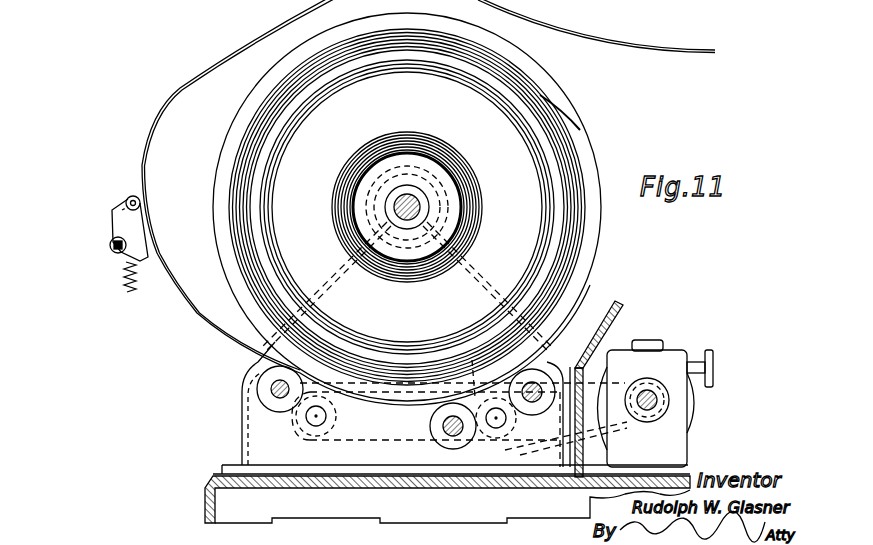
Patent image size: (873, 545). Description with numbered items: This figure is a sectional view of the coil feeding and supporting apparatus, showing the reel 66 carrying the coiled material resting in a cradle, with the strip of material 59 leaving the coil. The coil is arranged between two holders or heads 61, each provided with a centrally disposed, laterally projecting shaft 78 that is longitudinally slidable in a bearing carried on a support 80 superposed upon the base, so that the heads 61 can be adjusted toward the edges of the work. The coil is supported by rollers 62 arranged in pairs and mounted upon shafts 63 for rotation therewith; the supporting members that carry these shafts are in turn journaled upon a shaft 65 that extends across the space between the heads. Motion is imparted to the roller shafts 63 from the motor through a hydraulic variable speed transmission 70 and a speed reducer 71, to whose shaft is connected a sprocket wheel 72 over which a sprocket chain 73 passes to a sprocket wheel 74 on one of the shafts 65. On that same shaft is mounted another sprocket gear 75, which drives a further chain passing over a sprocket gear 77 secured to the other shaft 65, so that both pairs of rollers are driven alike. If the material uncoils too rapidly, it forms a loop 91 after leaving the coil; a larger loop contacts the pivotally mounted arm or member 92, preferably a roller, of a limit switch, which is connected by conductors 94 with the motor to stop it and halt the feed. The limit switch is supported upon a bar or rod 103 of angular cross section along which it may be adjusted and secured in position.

The strip 59 is at (673, 48).
The holder or head 61 is at (530, 89).
The reel 66 is at (557, 107).
The shaft 78 is at (420, 205).
The support 80 is at (477, 258).
The loop 91 is at (162, 104).
The arm or member 92 is at (133, 197).
The bar or rod 103 is at (111, 247).
The conductors 94 is at (124, 289).
The roller 62 is at (288, 368).
The shaft 63 is at (271, 389).
The shaft 65 is at (316, 418).
The sprocket gear 77 is at (308, 431).
The sprocket wheel 74 is at (527, 432).
The sprocket gear 75 is at (463, 369).
The hydraulic variable speed transmission 70 is at (680, 350).
The speed reducer 71 is at (698, 407).
The sprocket wheel 72 is at (657, 408).
The sprocket chain 73 is at (572, 439).